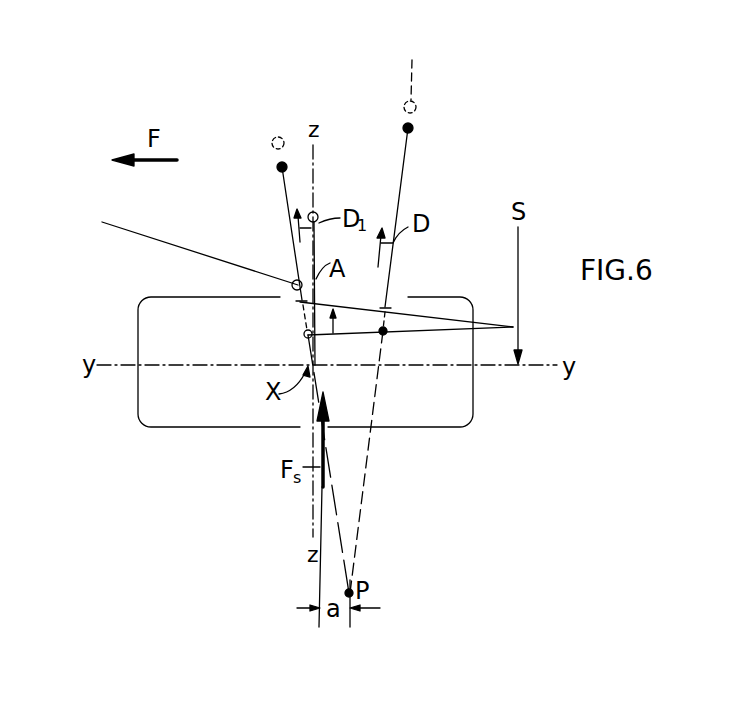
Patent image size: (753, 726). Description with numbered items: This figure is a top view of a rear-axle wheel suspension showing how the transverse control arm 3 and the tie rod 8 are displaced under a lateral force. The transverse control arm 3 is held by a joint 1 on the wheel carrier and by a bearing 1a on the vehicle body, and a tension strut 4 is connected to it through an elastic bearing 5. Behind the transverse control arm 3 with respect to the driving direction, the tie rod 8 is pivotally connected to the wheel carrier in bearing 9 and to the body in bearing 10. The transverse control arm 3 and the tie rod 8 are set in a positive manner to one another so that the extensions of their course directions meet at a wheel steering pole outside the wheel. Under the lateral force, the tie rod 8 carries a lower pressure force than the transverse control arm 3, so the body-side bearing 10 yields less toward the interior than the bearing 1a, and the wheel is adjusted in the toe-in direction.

The joint 1 is at (297, 307).
The bearing 1a is at (278, 136).
The transverse control arm 3 is at (286, 198).
The tension strut 4 is at (152, 238).
The elastic bearing 5 is at (293, 282).
The tie rod 8 is at (402, 168).
The bearing 9 is at (392, 303).
The bearing 10 is at (413, 127).